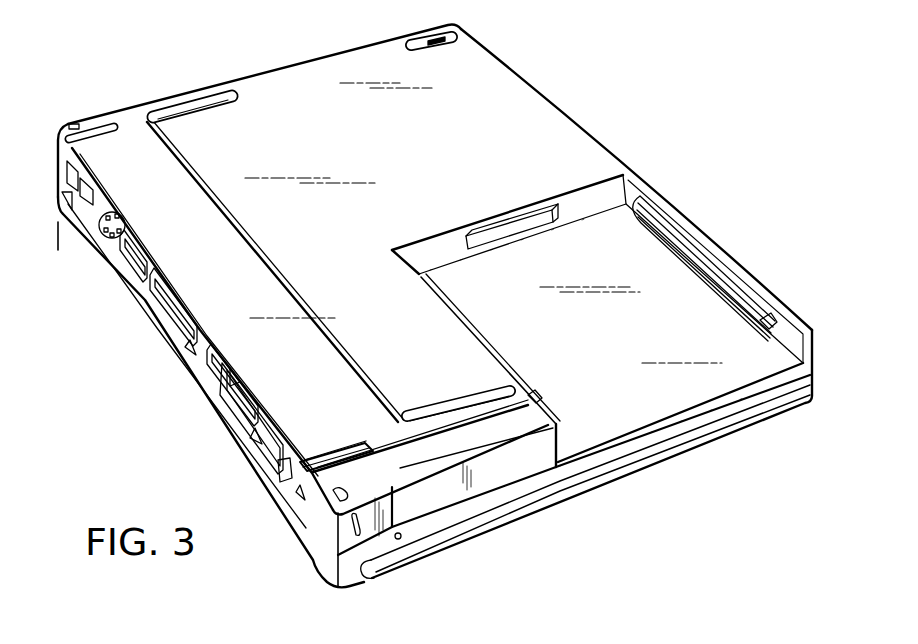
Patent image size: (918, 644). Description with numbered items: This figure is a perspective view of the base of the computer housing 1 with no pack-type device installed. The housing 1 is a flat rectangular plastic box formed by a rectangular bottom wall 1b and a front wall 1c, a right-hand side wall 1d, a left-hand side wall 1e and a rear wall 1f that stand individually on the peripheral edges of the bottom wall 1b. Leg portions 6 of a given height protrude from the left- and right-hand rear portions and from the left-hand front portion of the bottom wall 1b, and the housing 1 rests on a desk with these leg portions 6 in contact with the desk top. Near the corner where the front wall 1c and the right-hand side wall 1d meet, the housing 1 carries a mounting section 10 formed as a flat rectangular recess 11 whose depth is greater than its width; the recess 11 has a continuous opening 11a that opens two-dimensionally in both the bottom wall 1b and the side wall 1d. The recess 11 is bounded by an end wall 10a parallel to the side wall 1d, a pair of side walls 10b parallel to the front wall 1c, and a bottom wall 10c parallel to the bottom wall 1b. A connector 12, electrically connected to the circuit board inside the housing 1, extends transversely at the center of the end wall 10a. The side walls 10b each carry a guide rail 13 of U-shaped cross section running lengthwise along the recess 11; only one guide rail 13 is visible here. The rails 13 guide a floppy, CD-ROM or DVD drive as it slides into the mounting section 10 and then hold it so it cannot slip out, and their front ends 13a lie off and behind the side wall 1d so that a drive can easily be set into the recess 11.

The housing 1 is at (222, 307).
The bottom wall 1b is at (318, 72).
The front wall 1c is at (600, 148).
The right-hand side wall 1d is at (556, 476).
The left-hand side wall 1e is at (252, 73).
The rear wall 1f is at (60, 214).
The leg portion 6 is at (200, 97).
The mounting section 10 is at (476, 291).
The end wall 10a is at (578, 200).
The side wall 10b is at (636, 190).
The bottom wall 10c is at (708, 382).
The recess 11 is at (670, 407).
The opening 11a is at (430, 243).
The connector 12 is at (501, 222).
The guide rail 13 is at (707, 257).
The front end 13a is at (780, 320).